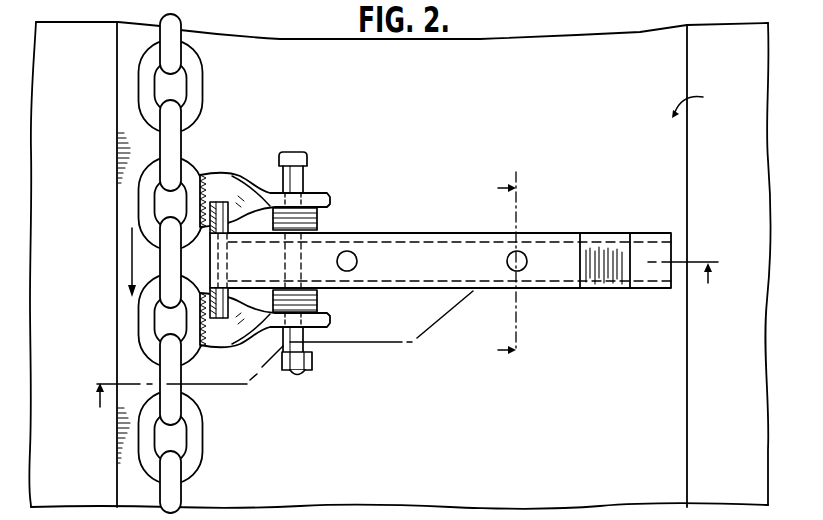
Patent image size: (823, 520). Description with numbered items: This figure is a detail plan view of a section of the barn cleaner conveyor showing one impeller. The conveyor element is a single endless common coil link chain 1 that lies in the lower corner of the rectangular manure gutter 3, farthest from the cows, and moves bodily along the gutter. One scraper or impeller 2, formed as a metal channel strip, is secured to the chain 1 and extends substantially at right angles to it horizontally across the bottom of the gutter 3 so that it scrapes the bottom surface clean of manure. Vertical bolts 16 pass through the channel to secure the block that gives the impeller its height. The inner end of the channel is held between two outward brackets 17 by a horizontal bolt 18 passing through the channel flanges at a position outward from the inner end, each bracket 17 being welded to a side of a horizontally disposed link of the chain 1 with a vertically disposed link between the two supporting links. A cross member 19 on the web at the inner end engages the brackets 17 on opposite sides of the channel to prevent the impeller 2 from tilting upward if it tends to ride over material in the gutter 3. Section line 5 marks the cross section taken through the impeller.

The coil link chain 1 is at (211, 427).
The impeller 2 is at (596, 228).
The manure gutter 3 is at (408, 244).
The section line 5- 5 is at (515, 265).
The vertical bolts 16 is at (353, 253).
The outward brackets 17 is at (328, 190).
The horizontal bolt 18 is at (302, 146).
The cross member 19 is at (218, 320).